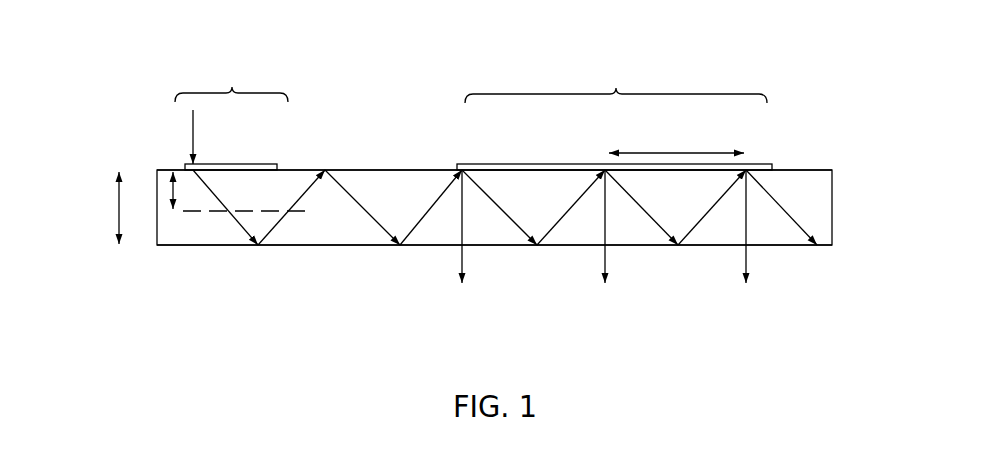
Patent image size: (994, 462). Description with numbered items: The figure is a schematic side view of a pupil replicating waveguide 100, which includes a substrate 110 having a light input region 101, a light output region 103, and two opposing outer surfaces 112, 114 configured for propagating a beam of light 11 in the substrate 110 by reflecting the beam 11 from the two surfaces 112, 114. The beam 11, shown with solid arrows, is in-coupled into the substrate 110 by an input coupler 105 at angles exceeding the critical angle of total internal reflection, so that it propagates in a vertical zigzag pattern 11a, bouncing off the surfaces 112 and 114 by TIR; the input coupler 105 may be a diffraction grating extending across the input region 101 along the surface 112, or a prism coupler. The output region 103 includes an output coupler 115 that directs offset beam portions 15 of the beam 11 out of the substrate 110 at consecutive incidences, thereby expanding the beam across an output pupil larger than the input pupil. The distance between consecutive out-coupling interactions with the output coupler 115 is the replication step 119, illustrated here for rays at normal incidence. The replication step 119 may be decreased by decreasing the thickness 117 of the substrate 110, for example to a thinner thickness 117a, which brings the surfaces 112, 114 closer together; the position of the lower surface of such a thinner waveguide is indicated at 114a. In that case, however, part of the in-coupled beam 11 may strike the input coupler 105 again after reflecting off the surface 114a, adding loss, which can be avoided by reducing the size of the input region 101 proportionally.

The pupil replicating waveguide 100 is at (508, 24).
The light input region 101 is at (231, 82).
The light output region 103 is at (616, 85).
The input coupler 105 is at (257, 164).
The substrate 110 is at (795, 168).
The beam of light 11 is at (199, 117).
The light propagating by total internal reflection 11a is at (259, 177).
The outer surface 112 is at (373, 167).
The outer surface 114 is at (330, 247).
The opposing surface of the thinner waveguide 114a is at (211, 214).
The output coupler 115 is at (532, 164).
The thickness 117 is at (117, 185).
The thickness 117a is at (156, 170).
The replication step 119 is at (654, 152).
The offset beam portions 15 is at (603, 258).